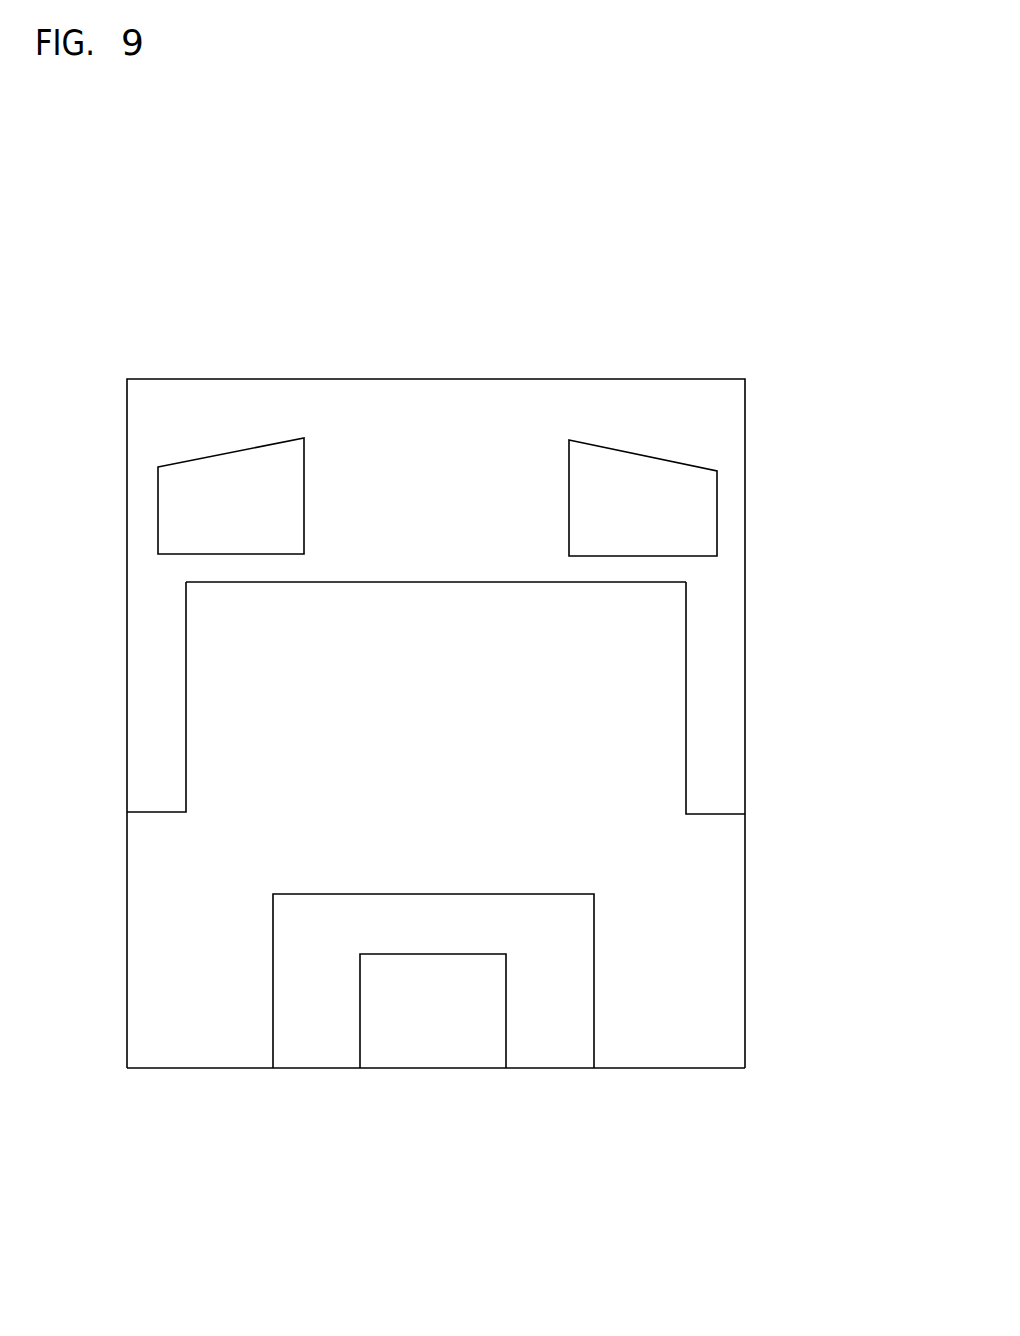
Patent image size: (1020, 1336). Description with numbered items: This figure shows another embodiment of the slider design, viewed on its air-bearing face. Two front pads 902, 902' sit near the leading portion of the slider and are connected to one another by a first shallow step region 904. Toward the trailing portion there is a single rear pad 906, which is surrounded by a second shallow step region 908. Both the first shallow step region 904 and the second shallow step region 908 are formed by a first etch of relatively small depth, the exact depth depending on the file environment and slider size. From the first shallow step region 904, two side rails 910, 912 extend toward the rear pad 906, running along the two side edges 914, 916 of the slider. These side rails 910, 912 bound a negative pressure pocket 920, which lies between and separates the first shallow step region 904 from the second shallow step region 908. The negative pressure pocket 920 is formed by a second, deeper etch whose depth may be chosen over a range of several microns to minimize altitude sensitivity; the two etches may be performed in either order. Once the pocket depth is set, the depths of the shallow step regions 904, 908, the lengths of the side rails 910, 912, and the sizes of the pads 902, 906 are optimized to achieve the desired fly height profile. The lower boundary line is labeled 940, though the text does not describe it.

The first shallow step region 904 is at (733, 480).
The front pad 902 is at (154, 496).
The front pad 902' is at (704, 498).
The negative pressure pocket 920 is at (590, 720).
The side rail 910 is at (152, 669).
The side rail 912 is at (720, 668).
The side edge 914 is at (127, 907).
The side edge 916 is at (744, 921).
The bottom edge 940 is at (667, 1070).
The second shallow step region 908 is at (559, 1033).
The rear pad 906 is at (449, 984).